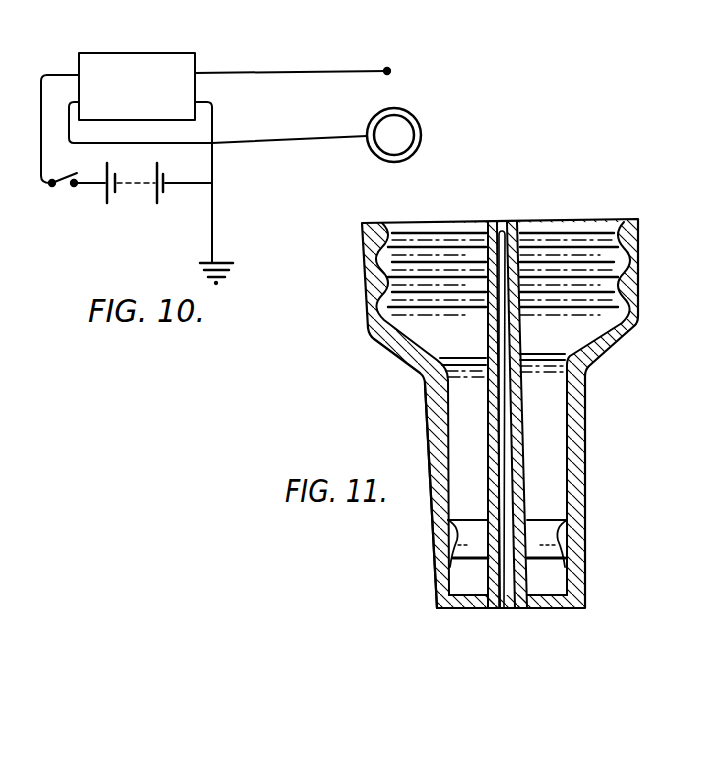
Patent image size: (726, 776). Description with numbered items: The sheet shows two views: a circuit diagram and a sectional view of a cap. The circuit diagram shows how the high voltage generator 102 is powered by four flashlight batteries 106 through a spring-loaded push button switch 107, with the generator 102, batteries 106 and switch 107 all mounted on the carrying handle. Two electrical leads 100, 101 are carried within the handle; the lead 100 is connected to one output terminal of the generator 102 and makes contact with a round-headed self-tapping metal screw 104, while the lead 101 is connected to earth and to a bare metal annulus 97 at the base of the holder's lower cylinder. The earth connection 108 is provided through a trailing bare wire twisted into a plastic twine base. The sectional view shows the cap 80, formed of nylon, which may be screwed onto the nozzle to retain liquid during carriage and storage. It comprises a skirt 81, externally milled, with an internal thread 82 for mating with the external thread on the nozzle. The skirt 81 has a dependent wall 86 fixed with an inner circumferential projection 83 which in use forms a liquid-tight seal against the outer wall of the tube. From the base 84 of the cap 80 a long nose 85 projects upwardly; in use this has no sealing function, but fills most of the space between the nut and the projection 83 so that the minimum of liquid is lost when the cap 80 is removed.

In FIG. 11, the cap 80 is at (502, 401).
In FIG. 11, the skirt 81 is at (641, 225).
In FIG. 11, the internal thread 82 is at (414, 222).
In FIG. 11, the inner circumferential projection 83 is at (458, 535).
In FIG. 11, the base 84 is at (553, 609).
In FIG. 11, the long nose 85 is at (524, 222).
In FIG. 11, the dependent wall 86 is at (427, 440).
In FIG. 10, the metal annulus 97 is at (412, 113).
In FIG. 10, the electrical lead 100 is at (366, 70).
In FIG. 10, the electrical lead 101 is at (350, 134).
In FIG. 10, the high voltage generator 102 is at (196, 62).
In FIG. 10, the self-tapping metal screw 104 is at (390, 70).
In FIG. 10, the flashlight batteries 106 is at (138, 190).
In FIG. 10, the push button switch 107 is at (66, 190).
In FIG. 10, the earth connection 108 is at (212, 241).